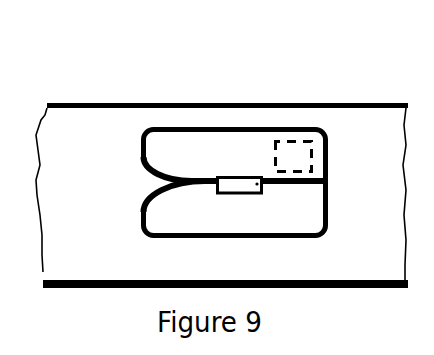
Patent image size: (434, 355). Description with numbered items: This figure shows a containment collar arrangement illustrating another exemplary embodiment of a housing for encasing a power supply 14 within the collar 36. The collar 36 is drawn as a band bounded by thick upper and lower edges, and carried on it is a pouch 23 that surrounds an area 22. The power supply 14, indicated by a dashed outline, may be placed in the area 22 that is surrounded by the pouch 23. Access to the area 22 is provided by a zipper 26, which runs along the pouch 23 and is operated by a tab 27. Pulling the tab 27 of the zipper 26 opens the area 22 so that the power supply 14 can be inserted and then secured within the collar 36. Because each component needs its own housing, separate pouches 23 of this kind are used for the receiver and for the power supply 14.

The collar 36 is at (88, 113).
The area 22 is at (153, 178).
The zipper 26 is at (180, 173).
The tab 27 is at (230, 179).
The pouch 23 is at (307, 218).
The power supply 14 is at (300, 163).